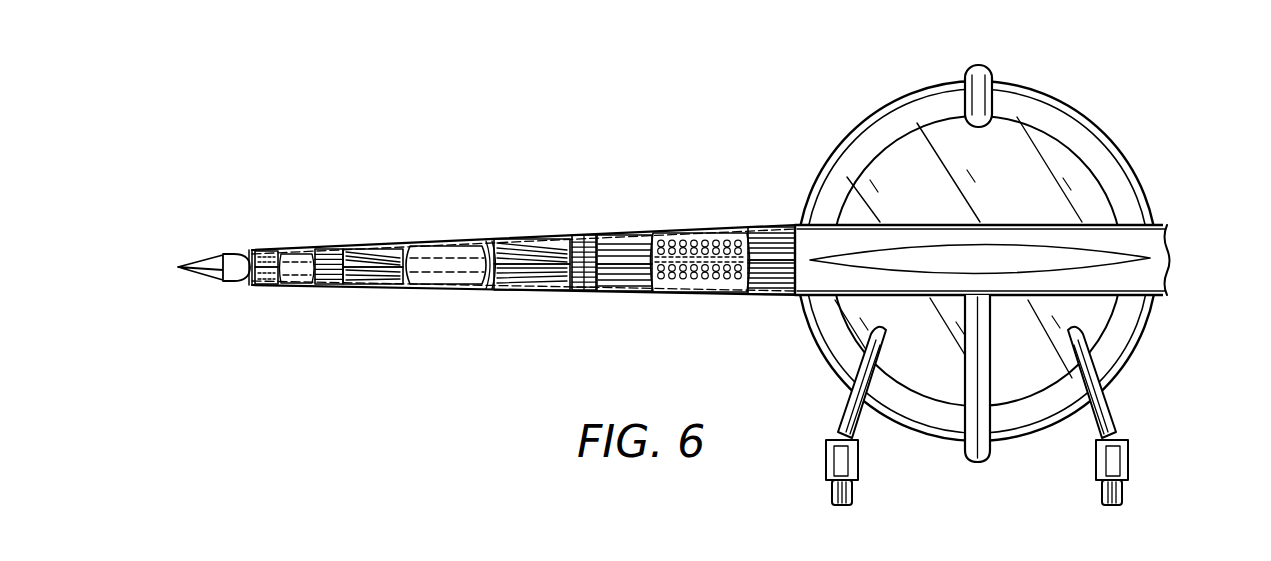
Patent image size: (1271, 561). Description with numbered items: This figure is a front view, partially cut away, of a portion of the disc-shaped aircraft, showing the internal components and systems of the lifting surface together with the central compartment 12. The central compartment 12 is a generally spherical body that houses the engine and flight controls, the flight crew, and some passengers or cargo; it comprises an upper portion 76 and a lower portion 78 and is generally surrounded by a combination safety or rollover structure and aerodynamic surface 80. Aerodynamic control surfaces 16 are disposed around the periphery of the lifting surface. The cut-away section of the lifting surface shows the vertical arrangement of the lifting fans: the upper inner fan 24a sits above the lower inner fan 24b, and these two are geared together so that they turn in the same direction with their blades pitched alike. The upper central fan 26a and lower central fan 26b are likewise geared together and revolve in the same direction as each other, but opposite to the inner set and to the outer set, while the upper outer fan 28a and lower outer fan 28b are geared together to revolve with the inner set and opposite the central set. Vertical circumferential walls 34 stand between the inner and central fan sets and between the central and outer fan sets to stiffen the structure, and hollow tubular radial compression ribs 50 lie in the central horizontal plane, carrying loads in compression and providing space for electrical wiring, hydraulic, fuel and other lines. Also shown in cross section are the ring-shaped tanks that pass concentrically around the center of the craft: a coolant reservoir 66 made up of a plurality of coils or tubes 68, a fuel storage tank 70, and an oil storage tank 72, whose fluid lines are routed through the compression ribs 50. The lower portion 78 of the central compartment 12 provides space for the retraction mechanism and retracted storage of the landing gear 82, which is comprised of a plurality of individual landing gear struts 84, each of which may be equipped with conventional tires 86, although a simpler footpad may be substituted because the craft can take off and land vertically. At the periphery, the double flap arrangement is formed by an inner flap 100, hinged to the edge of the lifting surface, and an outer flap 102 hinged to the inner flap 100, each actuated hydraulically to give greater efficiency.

The central compartment 12 is at (1118, 184).
The aerodynamic control surfaces 16 is at (212, 294).
The upper inner fan 24a is at (650, 208).
The lower inner fan 24b is at (618, 278).
The upper central fan 26a is at (372, 250).
The lower central fan 26b is at (383, 280).
The upper outer fan 28a is at (265, 250).
The lower outer fan 28b is at (266, 285).
The vertical circumferential walls 34 is at (330, 280).
The radial compression ribs 50 is at (489, 286).
The coolant reservoir 66 is at (672, 236).
The coils or tubes 68 is at (722, 236).
The fuel storage tank 70 is at (430, 250).
The oil storage tank 72 is at (297, 276).
The upper portion 76 is at (875, 172).
The lower portion 78 is at (1100, 330).
The safety or rollover structure and aerodynamic surface 80 is at (993, 66).
The landing gear 82 is at (826, 432).
The landing gear struts 84 is at (838, 400).
The tires 86 is at (853, 486).
The inner flap 100 is at (220, 254).
The outer flap 102 is at (190, 262).